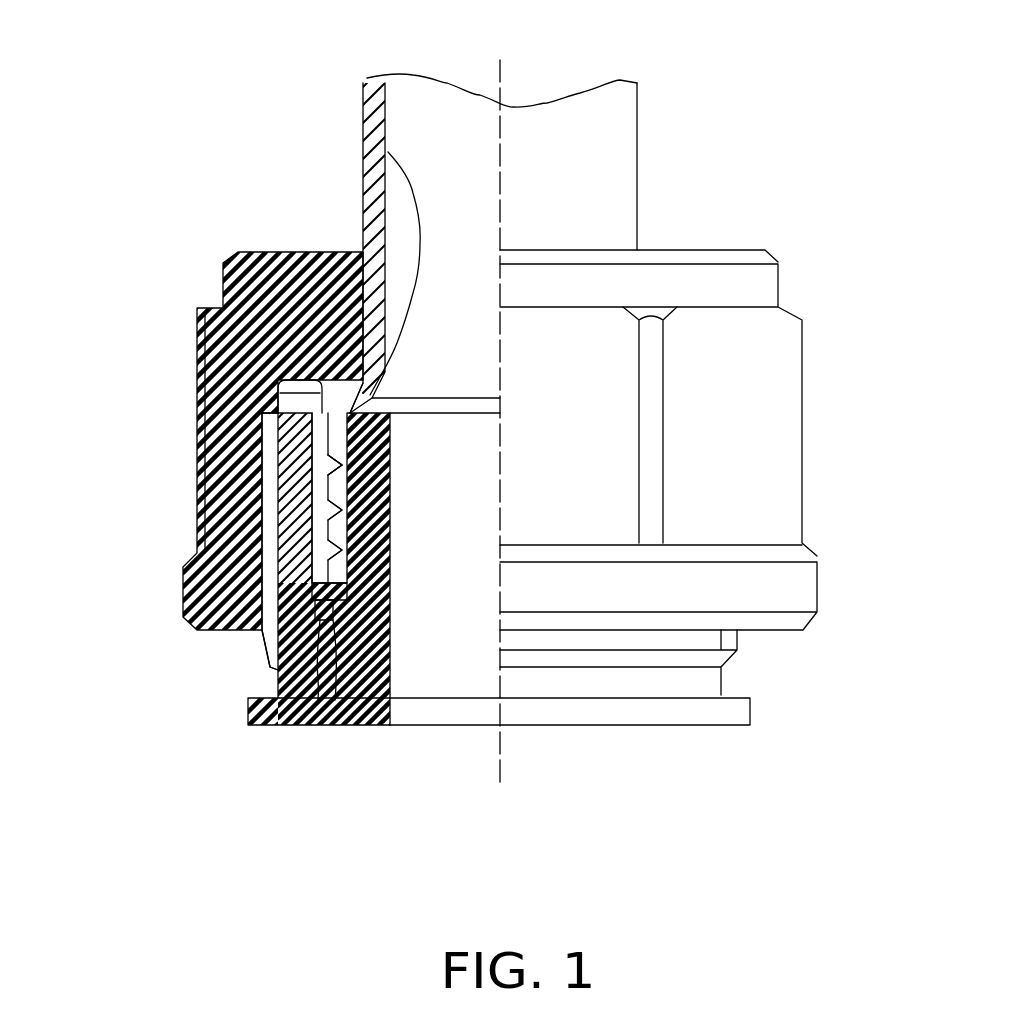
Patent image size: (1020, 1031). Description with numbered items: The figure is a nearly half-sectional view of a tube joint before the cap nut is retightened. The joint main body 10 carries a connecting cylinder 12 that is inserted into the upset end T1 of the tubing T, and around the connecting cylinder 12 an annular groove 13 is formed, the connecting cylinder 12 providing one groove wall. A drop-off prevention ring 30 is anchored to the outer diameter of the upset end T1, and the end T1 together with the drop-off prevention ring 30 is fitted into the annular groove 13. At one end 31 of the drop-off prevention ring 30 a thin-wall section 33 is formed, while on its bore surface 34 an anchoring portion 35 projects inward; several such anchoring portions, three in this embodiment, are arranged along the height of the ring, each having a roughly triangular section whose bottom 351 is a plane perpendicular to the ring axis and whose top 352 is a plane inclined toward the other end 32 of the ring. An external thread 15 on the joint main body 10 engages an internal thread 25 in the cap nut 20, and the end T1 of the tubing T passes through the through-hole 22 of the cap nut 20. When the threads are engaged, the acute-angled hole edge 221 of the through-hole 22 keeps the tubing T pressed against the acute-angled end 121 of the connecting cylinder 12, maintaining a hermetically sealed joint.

The joint main body 10 is at (775, 713).
The connecting cylinder 12 is at (392, 448).
The end of the connecting cylinder 121 is at (375, 397).
The annular groove 13 is at (322, 685).
The external thread 15 is at (268, 640).
The cap nut 20 is at (790, 240).
The through-hole 22 is at (352, 413).
The hole edge 221 is at (375, 292).
The internal thread 25 is at (290, 590).
The drop-off prevention ring 30 is at (274, 622).
The one end of the drop-off prevention ring 31 is at (191, 386).
The other end of the drop-off prevention ring 32 is at (280, 662).
The thin-wall section 33 is at (280, 393).
The bore surface 34 is at (330, 650).
The anchoring portion 35 is at (345, 565).
The bottom of the anchoring portion 351 is at (320, 497).
The top of the anchoring portion 352 is at (315, 450).
The tubing T is at (637, 137).
The end of the tubing T1 is at (392, 537).